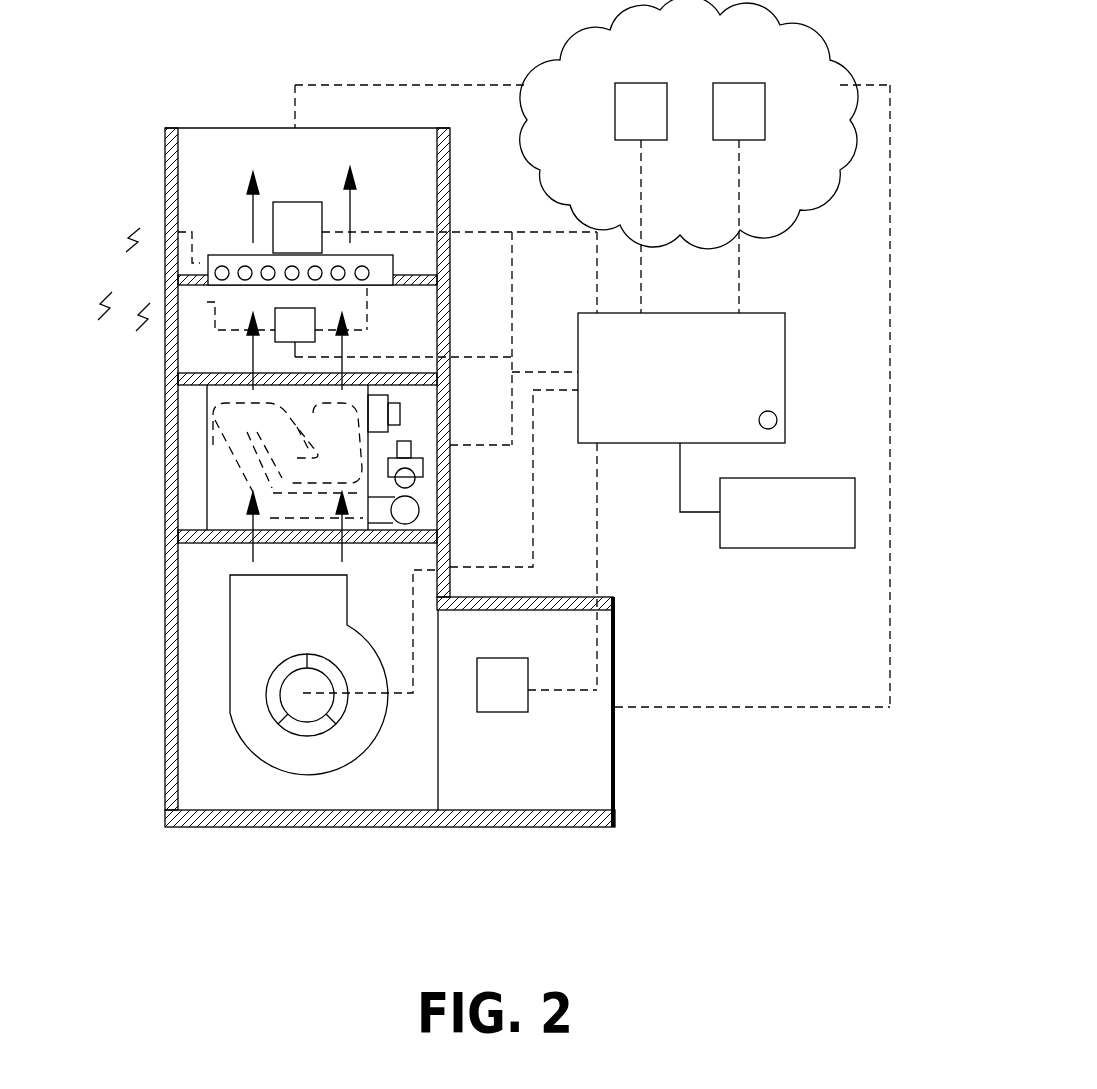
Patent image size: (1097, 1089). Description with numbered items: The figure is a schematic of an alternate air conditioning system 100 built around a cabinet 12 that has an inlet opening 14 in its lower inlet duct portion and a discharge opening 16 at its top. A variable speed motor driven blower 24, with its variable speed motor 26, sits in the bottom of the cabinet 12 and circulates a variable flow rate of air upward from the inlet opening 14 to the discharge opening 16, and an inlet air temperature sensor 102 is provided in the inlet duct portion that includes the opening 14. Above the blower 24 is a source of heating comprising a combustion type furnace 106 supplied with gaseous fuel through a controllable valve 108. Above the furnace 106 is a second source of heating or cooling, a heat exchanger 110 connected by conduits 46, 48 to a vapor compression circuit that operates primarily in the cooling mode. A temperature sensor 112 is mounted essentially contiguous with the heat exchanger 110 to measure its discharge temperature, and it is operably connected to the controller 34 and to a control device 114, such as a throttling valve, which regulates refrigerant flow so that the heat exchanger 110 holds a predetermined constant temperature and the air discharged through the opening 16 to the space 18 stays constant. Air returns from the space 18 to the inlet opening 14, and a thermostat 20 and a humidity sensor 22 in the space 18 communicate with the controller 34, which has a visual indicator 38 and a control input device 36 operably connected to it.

The cabinet 12 is at (165, 432).
The inlet opening 14 is at (615, 628).
The discharge opening 16 is at (193, 128).
The space 18 is at (742, 58).
The thermostat 20 is at (636, 83).
The humidity sensor 22 is at (765, 98).
The air circulating blower 24 is at (230, 717).
The variable speed electric drive motor 26 is at (292, 702).
The controller 34 is at (775, 312).
The control input device 36 is at (855, 478).
The visual indicator 38 is at (775, 412).
The conduit 46 is at (165, 232).
The conduit 48 is at (180, 334).
The system 100 is at (370, 477).
The inlet air temperature sensor 102 is at (503, 712).
The furnace 106 is at (200, 481).
The controllable valve 108 is at (423, 467).
The heat exchanger 110 is at (218, 252).
The temperature sensor 112 is at (297, 202).
The control device 114 is at (315, 313).